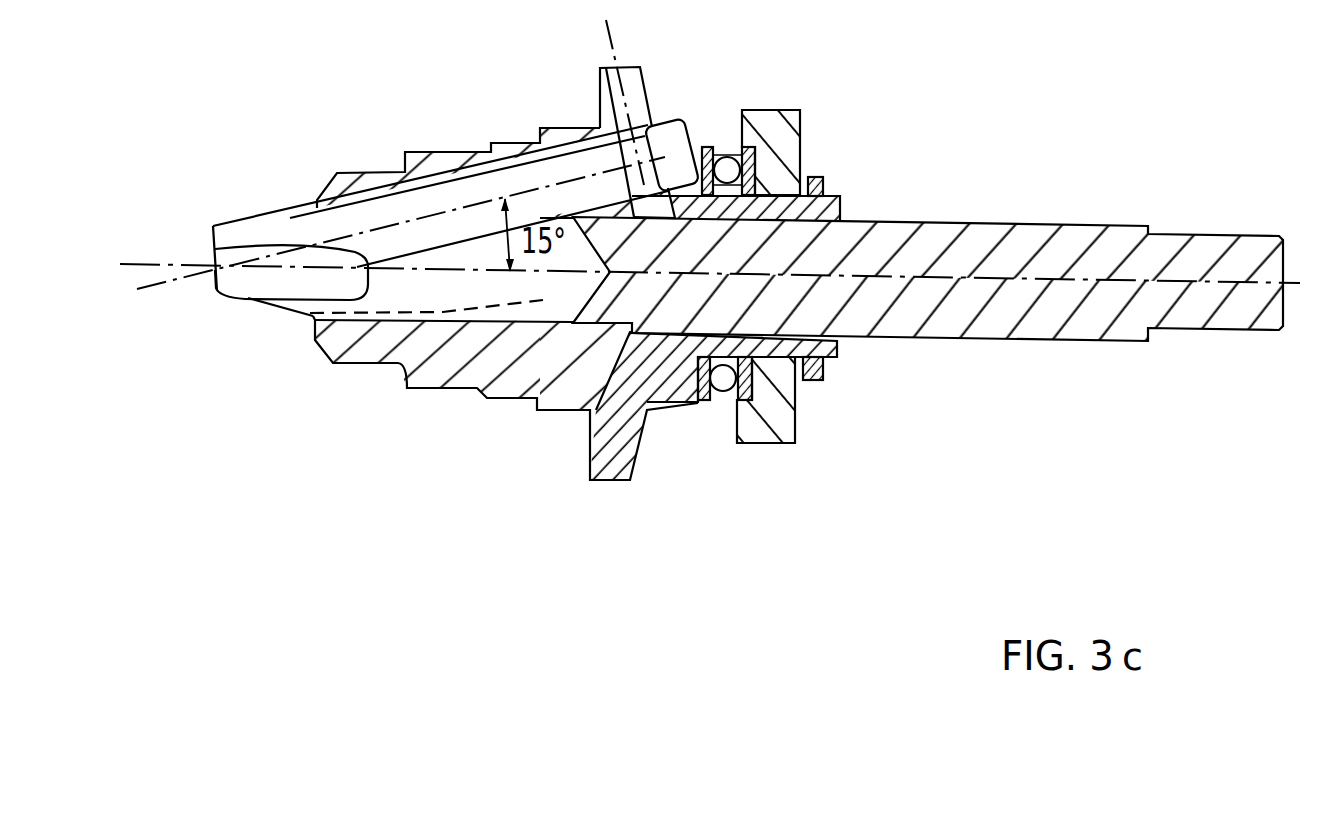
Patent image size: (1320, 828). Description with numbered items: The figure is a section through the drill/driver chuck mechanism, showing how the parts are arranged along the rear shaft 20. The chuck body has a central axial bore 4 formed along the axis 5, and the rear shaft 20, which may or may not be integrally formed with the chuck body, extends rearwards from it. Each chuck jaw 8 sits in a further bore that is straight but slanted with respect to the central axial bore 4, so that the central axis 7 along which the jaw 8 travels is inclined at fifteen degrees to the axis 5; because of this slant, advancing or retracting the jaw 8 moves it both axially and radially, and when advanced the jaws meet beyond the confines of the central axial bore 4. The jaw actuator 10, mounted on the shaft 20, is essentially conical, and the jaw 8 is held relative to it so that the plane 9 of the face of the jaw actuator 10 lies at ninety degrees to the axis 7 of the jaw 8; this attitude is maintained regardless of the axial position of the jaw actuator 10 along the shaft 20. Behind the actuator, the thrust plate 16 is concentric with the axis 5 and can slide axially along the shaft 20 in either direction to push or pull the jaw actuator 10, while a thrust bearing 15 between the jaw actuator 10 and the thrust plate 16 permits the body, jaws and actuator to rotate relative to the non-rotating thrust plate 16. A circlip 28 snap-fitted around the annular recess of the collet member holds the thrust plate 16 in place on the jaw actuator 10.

The central axial bore 4 is at (480, 386).
The axis 5 is at (158, 262).
The central axis of jaw 7 is at (187, 278).
The chuck jaw 8 is at (294, 226).
The plane of the face of the jaw actuator 9 is at (600, 45).
The jaw actuator 10 is at (643, 82).
The thrust bearing 15 is at (717, 400).
The thrust plate 16 is at (782, 425).
The rear shaft 20 is at (990, 324).
The circlip 28 is at (815, 180).